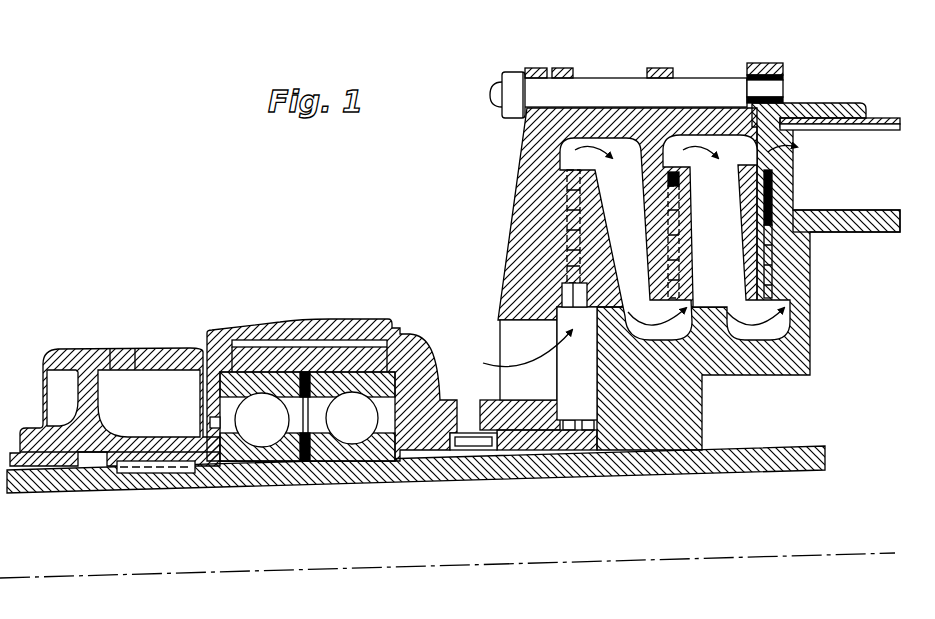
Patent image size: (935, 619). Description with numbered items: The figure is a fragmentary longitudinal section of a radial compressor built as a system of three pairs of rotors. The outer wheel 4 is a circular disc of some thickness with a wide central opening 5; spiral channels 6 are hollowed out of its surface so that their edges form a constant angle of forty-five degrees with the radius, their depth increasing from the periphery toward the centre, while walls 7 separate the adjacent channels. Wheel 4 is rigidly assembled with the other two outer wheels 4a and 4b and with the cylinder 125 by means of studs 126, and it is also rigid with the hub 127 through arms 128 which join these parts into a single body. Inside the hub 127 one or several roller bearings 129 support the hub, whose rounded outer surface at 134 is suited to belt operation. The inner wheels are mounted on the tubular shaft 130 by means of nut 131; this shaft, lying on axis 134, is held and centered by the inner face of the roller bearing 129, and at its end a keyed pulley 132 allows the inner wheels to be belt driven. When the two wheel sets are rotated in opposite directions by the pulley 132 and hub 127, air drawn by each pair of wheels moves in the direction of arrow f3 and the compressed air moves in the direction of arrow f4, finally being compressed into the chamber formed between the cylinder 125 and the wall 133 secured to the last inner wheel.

The outer wheel 4 is at (537, 280).
The wheel 4a is at (662, 210).
The wheel 4b is at (762, 201).
The central opening 5 is at (557, 318).
The spiral channels 6 is at (570, 233).
The walls 7 is at (570, 252).
The cylinder 125 is at (875, 122).
The studs 126 is at (683, 93).
The hub 127 is at (335, 360).
The arms 128 is at (528, 387).
The roller bearings 129 is at (266, 423).
The tubular shaft 130 is at (642, 460).
The nut 131 is at (547, 440).
The pulley 132 is at (153, 447).
The wall 133 is at (845, 217).
The axis 134 is at (348, 576).
The arrow f3 is at (628, 328).
The arrow f4 is at (695, 157).